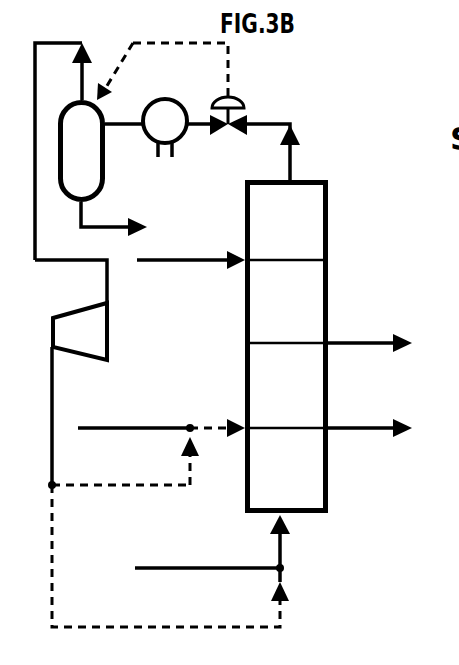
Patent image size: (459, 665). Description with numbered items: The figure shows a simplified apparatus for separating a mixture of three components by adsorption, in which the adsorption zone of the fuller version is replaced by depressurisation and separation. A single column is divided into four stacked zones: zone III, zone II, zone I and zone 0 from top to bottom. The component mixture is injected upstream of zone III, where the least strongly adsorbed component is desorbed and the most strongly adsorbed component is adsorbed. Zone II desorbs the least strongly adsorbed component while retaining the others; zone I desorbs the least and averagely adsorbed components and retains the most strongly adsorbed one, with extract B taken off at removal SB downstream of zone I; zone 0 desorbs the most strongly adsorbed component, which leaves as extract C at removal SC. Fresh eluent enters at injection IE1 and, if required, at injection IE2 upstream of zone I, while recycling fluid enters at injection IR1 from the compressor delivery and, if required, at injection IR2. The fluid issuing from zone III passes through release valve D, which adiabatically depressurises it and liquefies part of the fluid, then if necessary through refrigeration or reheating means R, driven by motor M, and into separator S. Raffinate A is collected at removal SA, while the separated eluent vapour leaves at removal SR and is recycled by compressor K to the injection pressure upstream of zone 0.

The removal of recycling fluid SR is at (63, 138).
The separator S is at (82, 151).
The removal of least strongly adsorbed component SA is at (114, 214).
The motor M is at (146, 128).
The refrigeration or reheating means R is at (202, 104).
The release valve D is at (162, 58).
The compressor K is at (80, 331).
The injection of fresh eluent IE2 is at (161, 417).
The injection of recycling fluid IR2 is at (125, 461).
The injection of fresh eluent IE1 is at (212, 543).
The recycling fluid injection IR1 is at (170, 556).
The removal of averagely adsorbed component SB is at (370, 332).
The removal of most strongly adsorbed component SC is at (370, 417).
The zone III is at (282, 226).
The zone II is at (282, 307).
The zone I is at (281, 391).
The zone O 0 is at (282, 472).
The distillation column is at (287, 347).